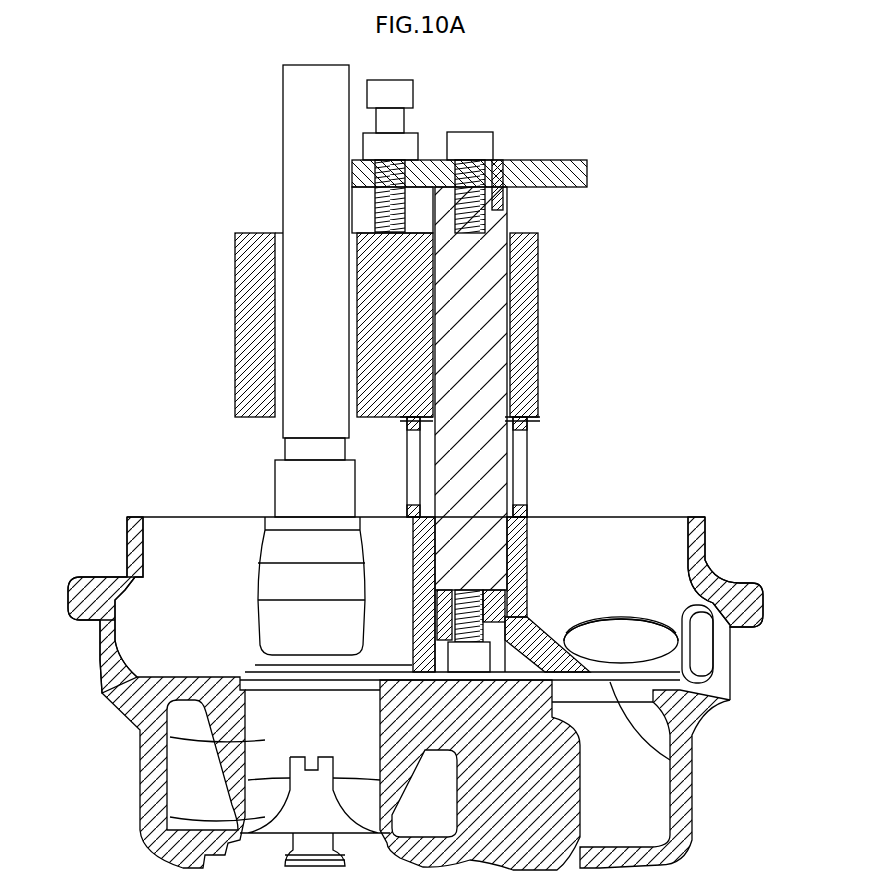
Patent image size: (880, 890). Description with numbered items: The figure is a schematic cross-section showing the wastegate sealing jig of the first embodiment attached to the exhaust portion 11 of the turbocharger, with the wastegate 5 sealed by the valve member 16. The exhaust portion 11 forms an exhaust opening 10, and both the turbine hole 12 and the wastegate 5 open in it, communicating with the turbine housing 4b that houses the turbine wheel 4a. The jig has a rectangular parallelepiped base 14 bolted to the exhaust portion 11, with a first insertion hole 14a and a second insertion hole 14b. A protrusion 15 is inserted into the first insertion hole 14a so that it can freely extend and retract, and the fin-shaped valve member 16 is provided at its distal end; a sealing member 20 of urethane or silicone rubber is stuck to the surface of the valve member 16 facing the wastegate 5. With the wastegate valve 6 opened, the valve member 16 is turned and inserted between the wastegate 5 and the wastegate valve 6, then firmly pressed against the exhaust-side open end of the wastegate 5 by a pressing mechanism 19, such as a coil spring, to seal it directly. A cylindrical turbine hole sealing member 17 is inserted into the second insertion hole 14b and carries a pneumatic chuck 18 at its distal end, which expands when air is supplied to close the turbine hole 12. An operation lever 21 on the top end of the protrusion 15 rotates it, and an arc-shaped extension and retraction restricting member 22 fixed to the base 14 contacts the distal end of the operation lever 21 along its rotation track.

The extension and retraction restricting member 22 is at (283, 130).
The operation lever 21 is at (414, 92).
The turbine hole sealing member 17 is at (295, 282).
The second insertion hole 14b is at (282, 232).
The base 14 is at (473, 325).
The first insertion hole 14a is at (549, 325).
The protrusion 15 is at (540, 352).
The pressing mechanism 19 is at (407, 442).
The valve member 16 is at (545, 595).
The wastegate valve 6 is at (604, 612).
The exhaust opening 10 is at (415, 587).
The exhaust portion 11 is at (705, 538).
The pneumatic chuck 18 is at (258, 605).
The turbine hole 12 is at (160, 733).
The turbine housing 4b is at (169, 772).
The turbine wheel 4a is at (140, 820).
The sealing member 20 is at (688, 752).
The wastegate 5 is at (657, 817).